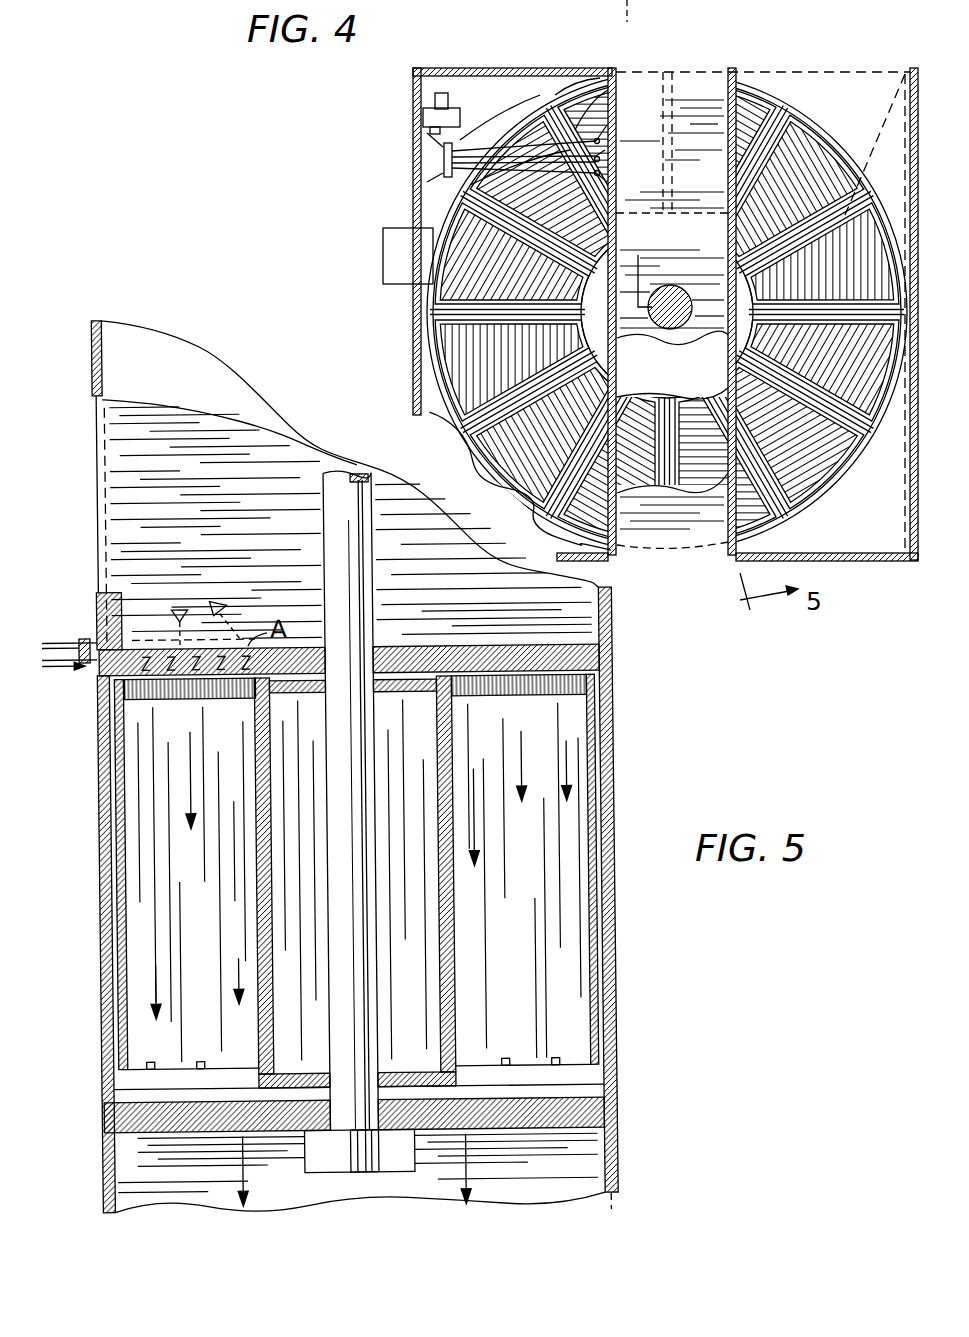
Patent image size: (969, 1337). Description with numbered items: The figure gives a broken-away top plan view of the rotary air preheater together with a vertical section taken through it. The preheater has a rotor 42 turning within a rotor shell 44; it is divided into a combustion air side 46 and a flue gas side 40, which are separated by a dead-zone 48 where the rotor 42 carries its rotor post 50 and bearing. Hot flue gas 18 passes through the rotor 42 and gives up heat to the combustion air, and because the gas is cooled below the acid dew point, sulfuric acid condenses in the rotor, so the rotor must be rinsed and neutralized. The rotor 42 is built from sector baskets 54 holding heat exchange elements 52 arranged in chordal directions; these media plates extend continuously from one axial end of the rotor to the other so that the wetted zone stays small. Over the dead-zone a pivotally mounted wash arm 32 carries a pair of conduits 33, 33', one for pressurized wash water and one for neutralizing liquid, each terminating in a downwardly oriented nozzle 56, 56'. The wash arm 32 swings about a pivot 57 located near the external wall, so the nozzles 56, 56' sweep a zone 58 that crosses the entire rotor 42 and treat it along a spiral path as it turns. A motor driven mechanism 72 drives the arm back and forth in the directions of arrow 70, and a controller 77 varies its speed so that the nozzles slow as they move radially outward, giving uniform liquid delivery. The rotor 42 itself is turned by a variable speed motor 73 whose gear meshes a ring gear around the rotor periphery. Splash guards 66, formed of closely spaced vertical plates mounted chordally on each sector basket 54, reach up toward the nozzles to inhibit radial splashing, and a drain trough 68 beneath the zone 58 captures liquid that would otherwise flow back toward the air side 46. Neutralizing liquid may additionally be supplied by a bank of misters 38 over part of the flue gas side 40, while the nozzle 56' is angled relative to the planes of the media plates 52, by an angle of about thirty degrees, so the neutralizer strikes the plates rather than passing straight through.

In FIG. 5, the flue gas 18 is at (148, 375).
In FIG. 4, the wash arm 32 is at (500, 109).
In FIG. 4, the conduit 33 is at (524, 80).
In FIG. 4, the conduit 33' is at (520, 180).
In FIG. 5, the bank of misters 38 is at (130, 630).
In FIG. 4, the flue gas side 40 is at (875, 103).
In FIG. 4, the rotor 42 is at (813, 510).
In FIG. 4, the rotor shell 44 is at (812, 58).
In FIG. 5, the rotor shell 44 is at (354, 765).
In FIG. 4, the combustion air side 46 is at (473, 72).
In FIG. 4, the dead-zone 48 is at (700, 77).
In FIG. 5, the dead-zone 48 is at (424, 870).
In FIG. 4, the rotor post 50 is at (683, 357).
In FIG. 5, the rotor post 50 is at (323, 552).
In FIG. 5, the heat exchange elements 52 is at (147, 940).
In FIG. 4, the sector baskets 54 is at (475, 178).
In FIG. 4, the nozzle 56 is at (626, 156).
In FIG. 5, the nozzle 56 is at (192, 618).
In FIG. 4, the nozzle 56' is at (629, 181).
In FIG. 5, the nozzle 56' is at (226, 582).
In FIG. 4, the pivot 57 is at (457, 147).
In FIG. 4, the zone 58 is at (613, 93).
In FIG. 4, the splash guards 66 is at (453, 343).
In FIG. 5, the splash guards 66 is at (568, 700).
In FIG. 4, the drain trough 68 is at (559, 92).
In FIG. 4, the arrow 70 is at (610, 120).
In FIG. 4, the motor driven mechanism 72 is at (430, 97).
In FIG. 4, the variable speed motor 73 is at (380, 236).
In FIG. 4, the controller 77 is at (430, 112).